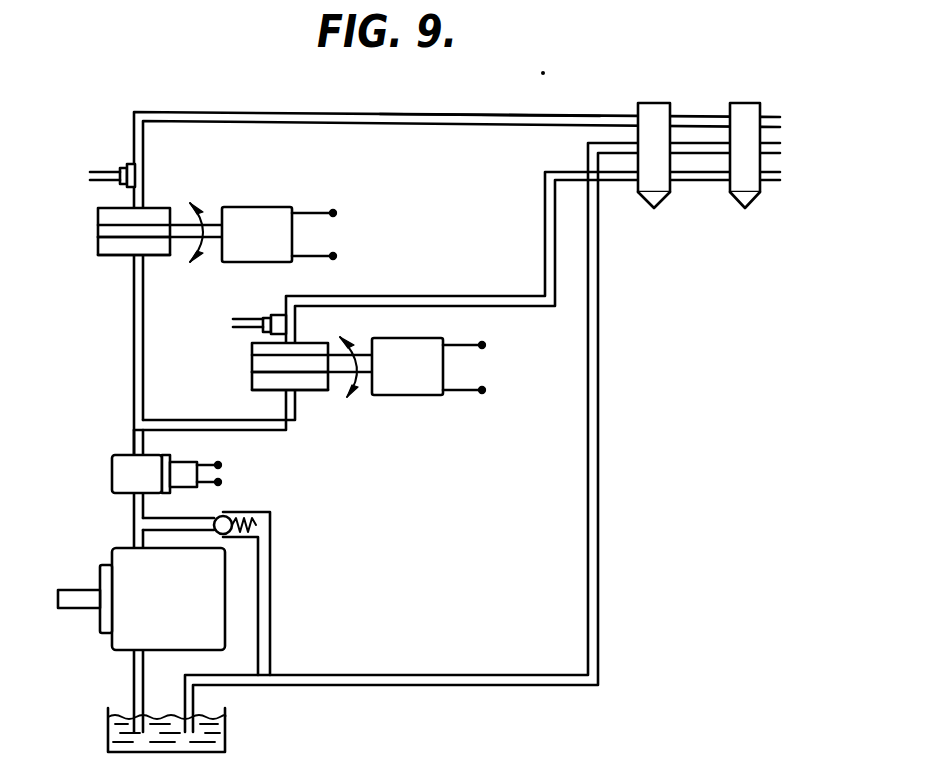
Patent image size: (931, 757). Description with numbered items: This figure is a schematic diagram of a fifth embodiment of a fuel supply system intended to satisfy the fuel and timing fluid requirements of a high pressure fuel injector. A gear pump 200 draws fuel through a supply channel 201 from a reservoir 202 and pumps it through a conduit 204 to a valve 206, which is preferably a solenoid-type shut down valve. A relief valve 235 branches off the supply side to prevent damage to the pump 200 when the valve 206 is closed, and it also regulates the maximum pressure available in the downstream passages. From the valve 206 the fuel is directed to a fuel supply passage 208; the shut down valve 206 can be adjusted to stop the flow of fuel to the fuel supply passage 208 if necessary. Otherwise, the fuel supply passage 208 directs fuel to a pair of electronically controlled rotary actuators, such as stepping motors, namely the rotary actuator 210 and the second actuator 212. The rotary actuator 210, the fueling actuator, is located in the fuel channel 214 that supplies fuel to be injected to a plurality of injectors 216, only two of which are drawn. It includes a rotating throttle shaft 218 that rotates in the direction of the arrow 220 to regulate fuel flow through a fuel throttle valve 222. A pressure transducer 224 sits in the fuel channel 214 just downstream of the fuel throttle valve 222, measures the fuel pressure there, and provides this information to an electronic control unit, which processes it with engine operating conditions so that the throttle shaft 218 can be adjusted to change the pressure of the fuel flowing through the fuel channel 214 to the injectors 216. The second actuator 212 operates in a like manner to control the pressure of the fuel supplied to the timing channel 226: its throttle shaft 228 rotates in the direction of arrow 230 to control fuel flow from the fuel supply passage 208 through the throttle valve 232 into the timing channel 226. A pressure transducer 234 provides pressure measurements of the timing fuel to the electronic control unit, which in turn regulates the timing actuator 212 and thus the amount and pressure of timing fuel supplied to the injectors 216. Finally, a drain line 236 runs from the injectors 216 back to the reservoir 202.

The gear pump 200 is at (187, 610).
The supply channel 201 is at (133, 675).
The reservoir 202 is at (115, 735).
The conduit 204 is at (130, 523).
The valve 206 is at (112, 470).
The fuel supply passage 208 is at (133, 398).
The rotary actuator 210 is at (410, 399).
The rotary actuator 212 is at (266, 195).
The fuel channel 214 is at (408, 295).
The injectors 216 is at (727, 192).
The throttle shaft 218 is at (252, 363).
The arrow 220 is at (353, 340).
The fuel throttle valve 222 is at (316, 392).
The pressure transducer 224 is at (273, 315).
The timing channel 226 is at (380, 115).
The throttle shaft 228 is at (98, 228).
The arrow 230 is at (207, 226).
The throttle valve 232 is at (118, 255).
The pressure transducer 234 is at (120, 168).
The relief valve 235 is at (272, 537).
The drain line 236 is at (512, 675).